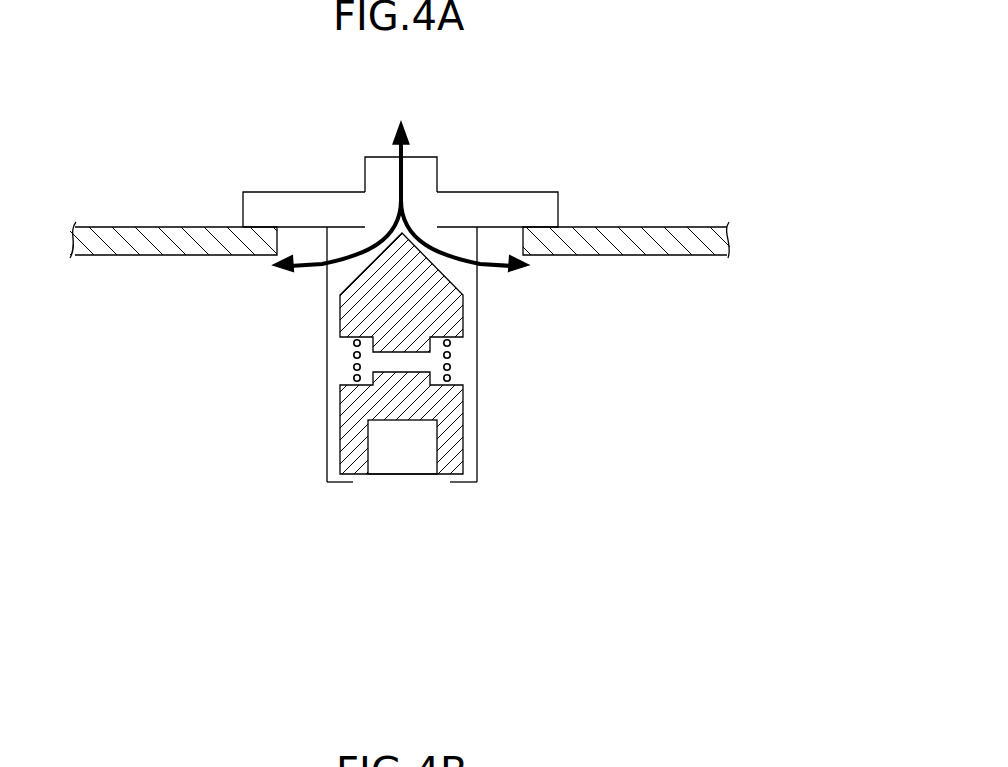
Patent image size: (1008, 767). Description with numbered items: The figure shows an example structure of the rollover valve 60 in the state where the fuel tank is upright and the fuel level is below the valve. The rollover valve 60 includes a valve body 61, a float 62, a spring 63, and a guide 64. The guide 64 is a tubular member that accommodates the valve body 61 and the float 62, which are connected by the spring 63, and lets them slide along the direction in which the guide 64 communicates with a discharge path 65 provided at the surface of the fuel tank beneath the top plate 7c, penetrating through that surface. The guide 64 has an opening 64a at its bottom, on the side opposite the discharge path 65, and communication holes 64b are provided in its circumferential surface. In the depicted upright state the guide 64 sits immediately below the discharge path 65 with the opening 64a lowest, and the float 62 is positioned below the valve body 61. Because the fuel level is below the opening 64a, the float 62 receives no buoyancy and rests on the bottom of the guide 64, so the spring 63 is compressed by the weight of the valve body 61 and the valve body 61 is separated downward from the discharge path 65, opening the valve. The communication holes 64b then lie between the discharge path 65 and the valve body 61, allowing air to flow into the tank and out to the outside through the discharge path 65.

The rollover valve 60 is at (213, 157).
The discharge path 65 is at (381, 196).
The top plate 7c is at (690, 222).
The communication holes 64b is at (313, 270).
The valve body 61 is at (450, 315).
The spring 63 is at (354, 367).
The guide 64 is at (327, 431).
The float 62 is at (448, 430).
The opening 64a is at (376, 486).